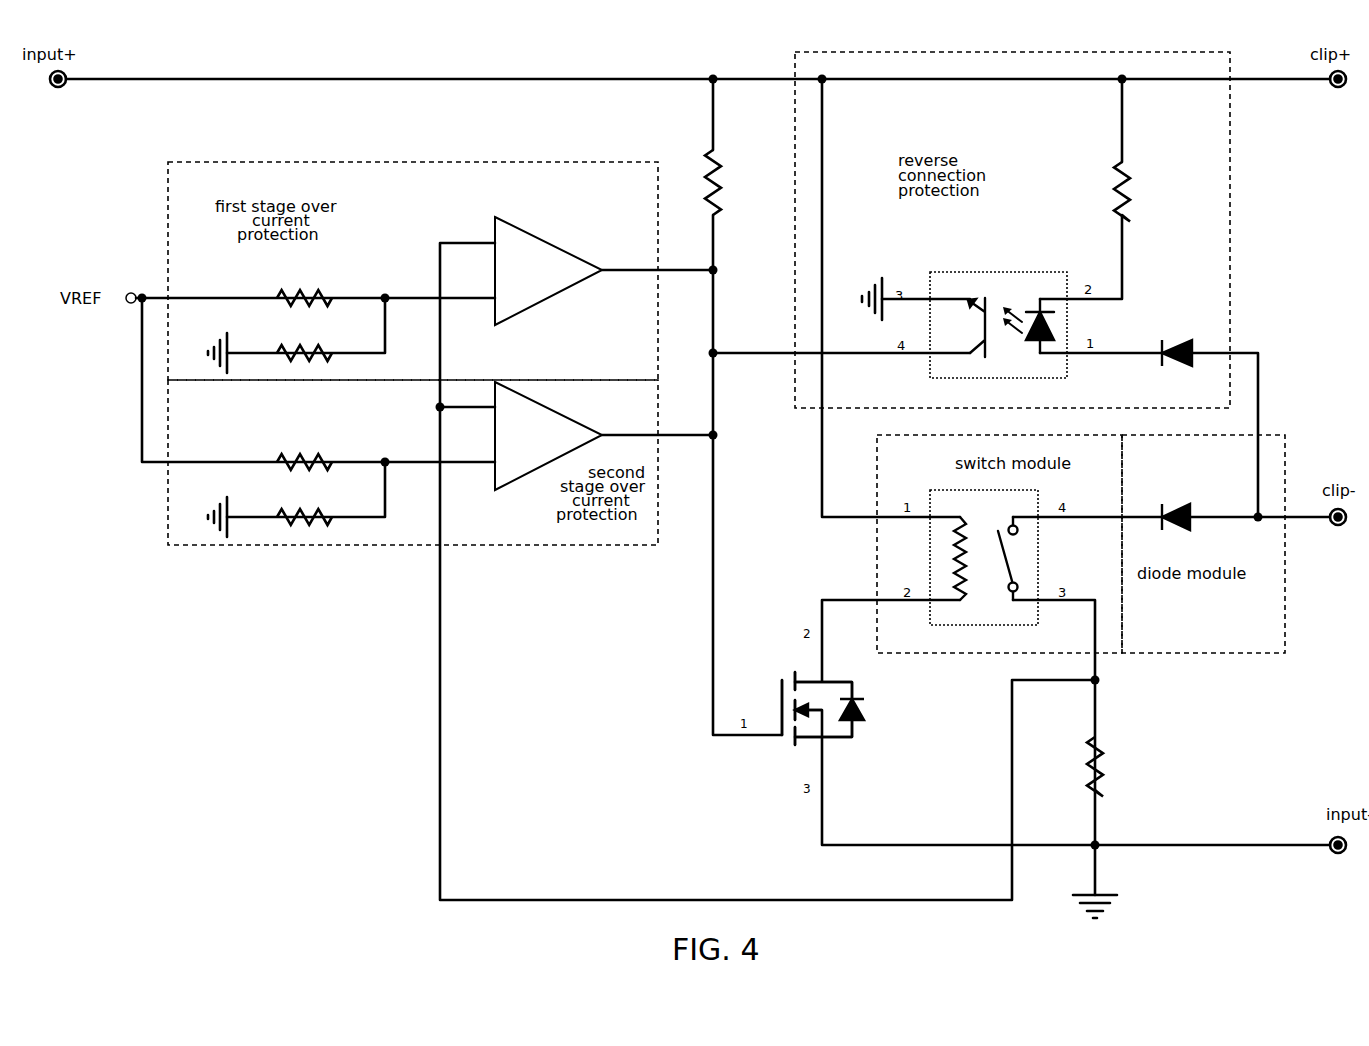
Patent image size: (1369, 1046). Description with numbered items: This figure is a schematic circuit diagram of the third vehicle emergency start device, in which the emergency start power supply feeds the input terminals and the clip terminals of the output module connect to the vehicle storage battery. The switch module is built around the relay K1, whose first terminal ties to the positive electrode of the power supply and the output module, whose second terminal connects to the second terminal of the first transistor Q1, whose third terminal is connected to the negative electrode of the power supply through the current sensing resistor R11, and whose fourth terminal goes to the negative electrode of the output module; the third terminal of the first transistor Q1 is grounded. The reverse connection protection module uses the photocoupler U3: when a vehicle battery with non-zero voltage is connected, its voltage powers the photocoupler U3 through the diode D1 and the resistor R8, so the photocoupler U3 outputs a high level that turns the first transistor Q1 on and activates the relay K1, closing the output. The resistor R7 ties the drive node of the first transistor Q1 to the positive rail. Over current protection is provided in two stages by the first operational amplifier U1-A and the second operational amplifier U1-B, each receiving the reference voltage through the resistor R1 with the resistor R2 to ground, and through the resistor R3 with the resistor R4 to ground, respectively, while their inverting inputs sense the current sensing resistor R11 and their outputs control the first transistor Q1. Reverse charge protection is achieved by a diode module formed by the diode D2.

The resistor R1 is at (304, 290).
The resistor R2 is at (304, 345).
The resistor R3 is at (304, 454).
The resistor R4 is at (304, 509).
The resistor R7 is at (723, 182).
The resistor R8 is at (1104, 191).
The current sensing resistor R11 is at (1111, 766).
The first operational amplifier U1-A is at (548, 270).
The second operational amplifier U1-B is at (548, 436).
The photocoupler U3 is at (998, 316).
The diode D1 is at (1169, 364).
The diode D2 is at (1178, 506).
The relay K1 is at (983, 548).
The first transistor Q1 is at (801, 725).